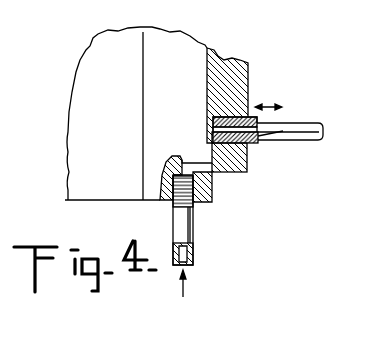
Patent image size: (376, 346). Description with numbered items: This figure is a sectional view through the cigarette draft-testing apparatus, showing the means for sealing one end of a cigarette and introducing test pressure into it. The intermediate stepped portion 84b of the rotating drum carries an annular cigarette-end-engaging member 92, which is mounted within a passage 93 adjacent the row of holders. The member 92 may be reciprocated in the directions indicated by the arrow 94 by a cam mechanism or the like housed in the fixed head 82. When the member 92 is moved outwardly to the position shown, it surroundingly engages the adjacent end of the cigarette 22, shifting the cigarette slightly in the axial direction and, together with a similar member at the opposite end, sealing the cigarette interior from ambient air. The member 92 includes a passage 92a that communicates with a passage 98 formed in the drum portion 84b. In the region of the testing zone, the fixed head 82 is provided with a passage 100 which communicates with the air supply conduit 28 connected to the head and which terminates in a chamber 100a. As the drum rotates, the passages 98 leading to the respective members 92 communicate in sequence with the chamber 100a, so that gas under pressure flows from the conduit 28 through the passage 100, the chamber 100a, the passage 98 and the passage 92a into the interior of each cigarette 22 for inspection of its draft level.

The head 82 is at (185, 73).
The intermediate stepped portion 84b is at (220, 52).
The passage 93 is at (230, 116).
The arrow 94 is at (268, 108).
The cigarette 22 is at (303, 123).
The passage 92a is at (283, 131).
The annular cigarette-end-engaging member 92 is at (258, 142).
The passage 98 is at (233, 152).
The passage 100 is at (212, 172).
The chamber 100a is at (196, 151).
The air supply conduit 28 is at (177, 223).